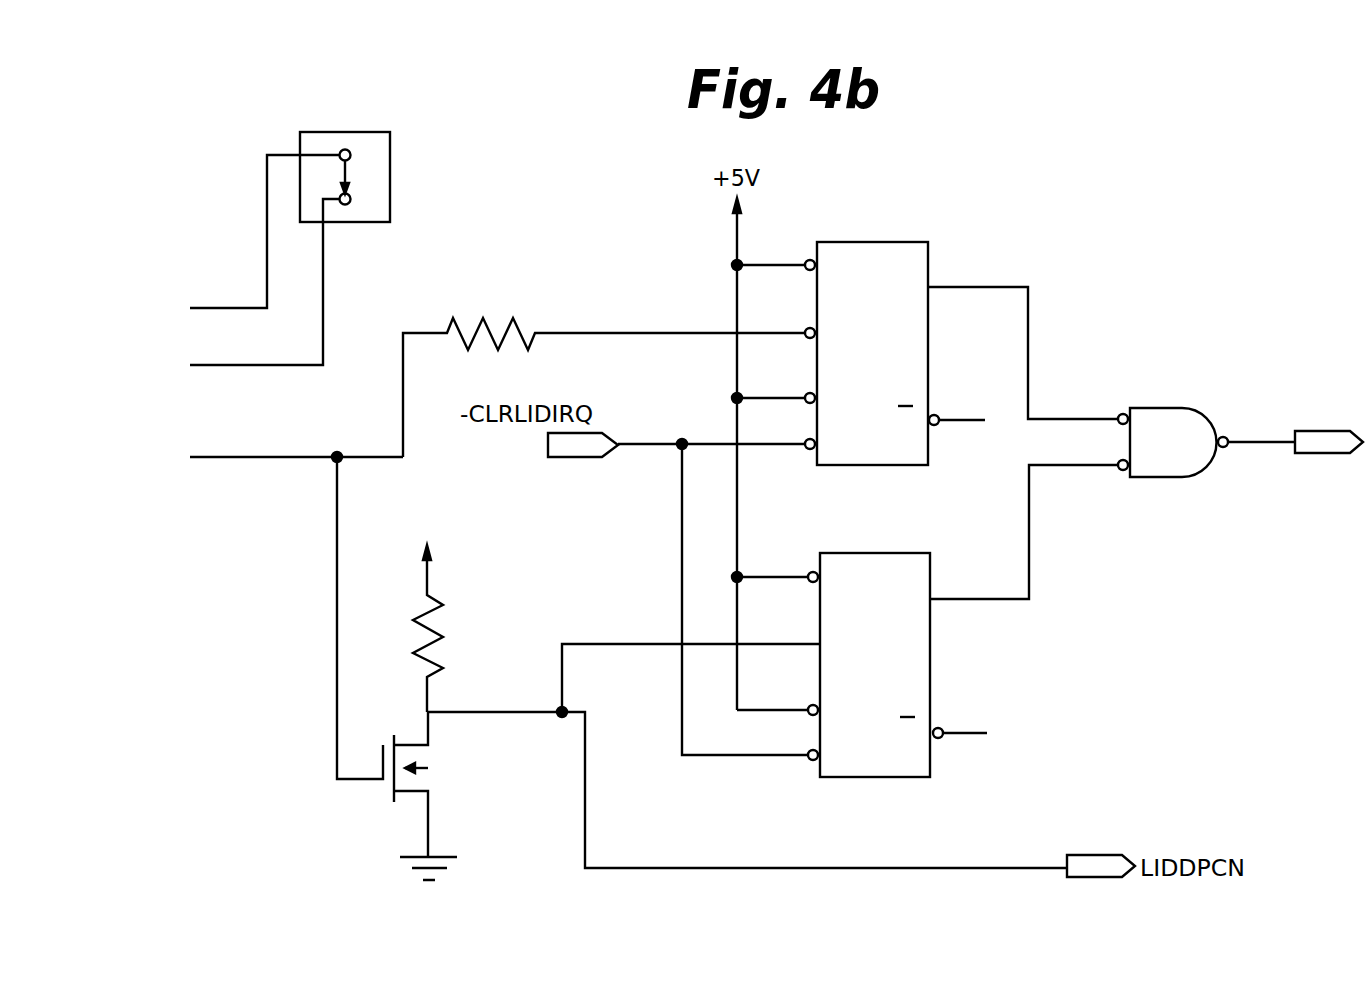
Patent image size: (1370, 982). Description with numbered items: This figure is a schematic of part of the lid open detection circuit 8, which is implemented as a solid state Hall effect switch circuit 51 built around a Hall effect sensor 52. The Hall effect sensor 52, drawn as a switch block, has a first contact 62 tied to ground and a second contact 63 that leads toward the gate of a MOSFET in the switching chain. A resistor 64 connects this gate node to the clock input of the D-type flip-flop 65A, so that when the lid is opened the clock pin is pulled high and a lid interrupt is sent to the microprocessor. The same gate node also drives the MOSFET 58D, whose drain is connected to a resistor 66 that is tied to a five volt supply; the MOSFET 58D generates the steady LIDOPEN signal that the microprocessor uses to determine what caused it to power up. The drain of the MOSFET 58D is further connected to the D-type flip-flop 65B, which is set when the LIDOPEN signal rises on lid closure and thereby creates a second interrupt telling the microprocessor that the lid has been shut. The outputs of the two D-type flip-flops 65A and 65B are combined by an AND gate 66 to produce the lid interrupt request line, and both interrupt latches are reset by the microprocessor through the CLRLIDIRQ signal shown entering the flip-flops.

The lid open detection circuit 8 is at (412, 147).
The Hall effect switch circuit 51 is at (448, 101).
The Hall effect sensor 52 is at (412, 147).
The first contact 62 is at (270, 293).
The second contact 63 is at (325, 325).
The resistor 64 is at (520, 330).
The resistor / AND gate 66 is at (442, 597).
The D-type flip-flop 65A is at (928, 250).
The D-type flip-flop 65B is at (932, 677).
The MOSFET 58D is at (408, 757).